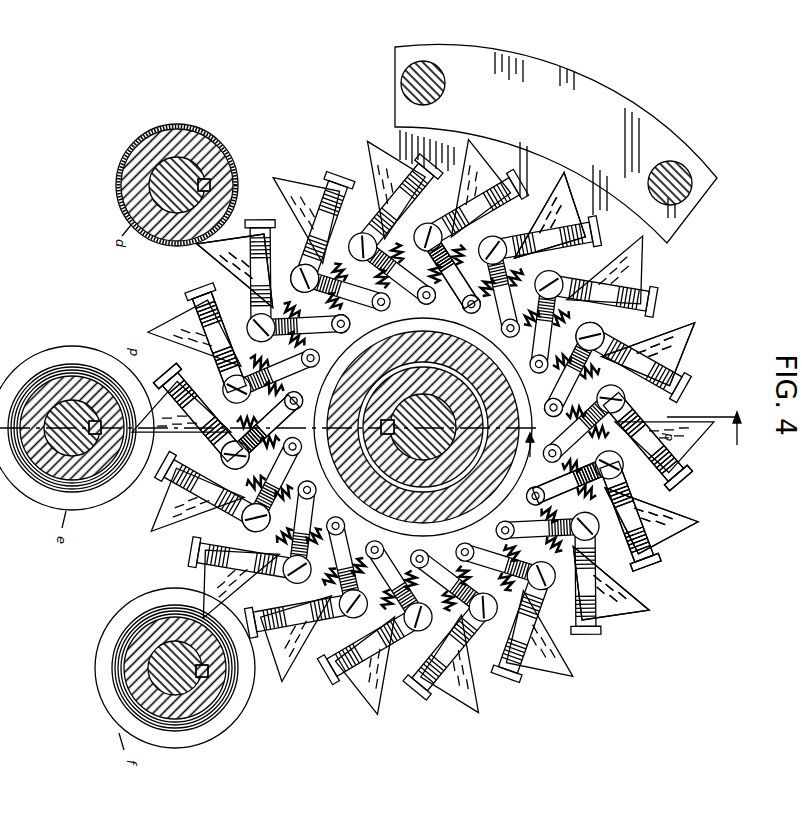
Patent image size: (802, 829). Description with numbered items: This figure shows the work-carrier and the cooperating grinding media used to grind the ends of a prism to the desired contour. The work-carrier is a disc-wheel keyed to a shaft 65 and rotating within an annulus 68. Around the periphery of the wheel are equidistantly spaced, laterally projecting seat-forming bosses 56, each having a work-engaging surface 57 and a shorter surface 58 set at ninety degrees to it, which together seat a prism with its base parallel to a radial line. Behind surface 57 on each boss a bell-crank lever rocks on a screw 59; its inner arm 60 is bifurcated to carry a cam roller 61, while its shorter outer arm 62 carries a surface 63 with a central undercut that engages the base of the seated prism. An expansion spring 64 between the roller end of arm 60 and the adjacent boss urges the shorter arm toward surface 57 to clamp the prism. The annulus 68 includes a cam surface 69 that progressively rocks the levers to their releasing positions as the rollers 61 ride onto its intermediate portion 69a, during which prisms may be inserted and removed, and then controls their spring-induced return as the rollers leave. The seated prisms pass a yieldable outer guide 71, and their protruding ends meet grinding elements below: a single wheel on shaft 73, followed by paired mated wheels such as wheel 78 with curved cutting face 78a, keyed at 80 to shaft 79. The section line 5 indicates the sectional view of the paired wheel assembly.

The section line 5- 5 is at (640, 434).
The seat-forming boss 56 is at (205, 262).
The work-engaging surface 57 is at (650, 540).
The shorter surface 58 is at (648, 565).
The screw 59 is at (650, 525).
The arm 60 is at (414, 398).
The cam roller 61 is at (424, 382).
The shorter arm 62 is at (176, 368).
The surface 63 is at (655, 330).
The expansion spring 64 is at (418, 460).
The shaft 65 is at (427, 460).
The annulus 68 is at (505, 427).
The cam surface 69 is at (503, 392).
The intermediate portion 69a is at (454, 275).
The yieldable outer guide 71 is at (688, 150).
The shaft 73 is at (152, 164).
The mated wheel 78 is at (130, 189).
The curved cutting face 78a is at (18, 470).
The shaft 79 is at (80, 443).
The key 80 is at (101, 433).